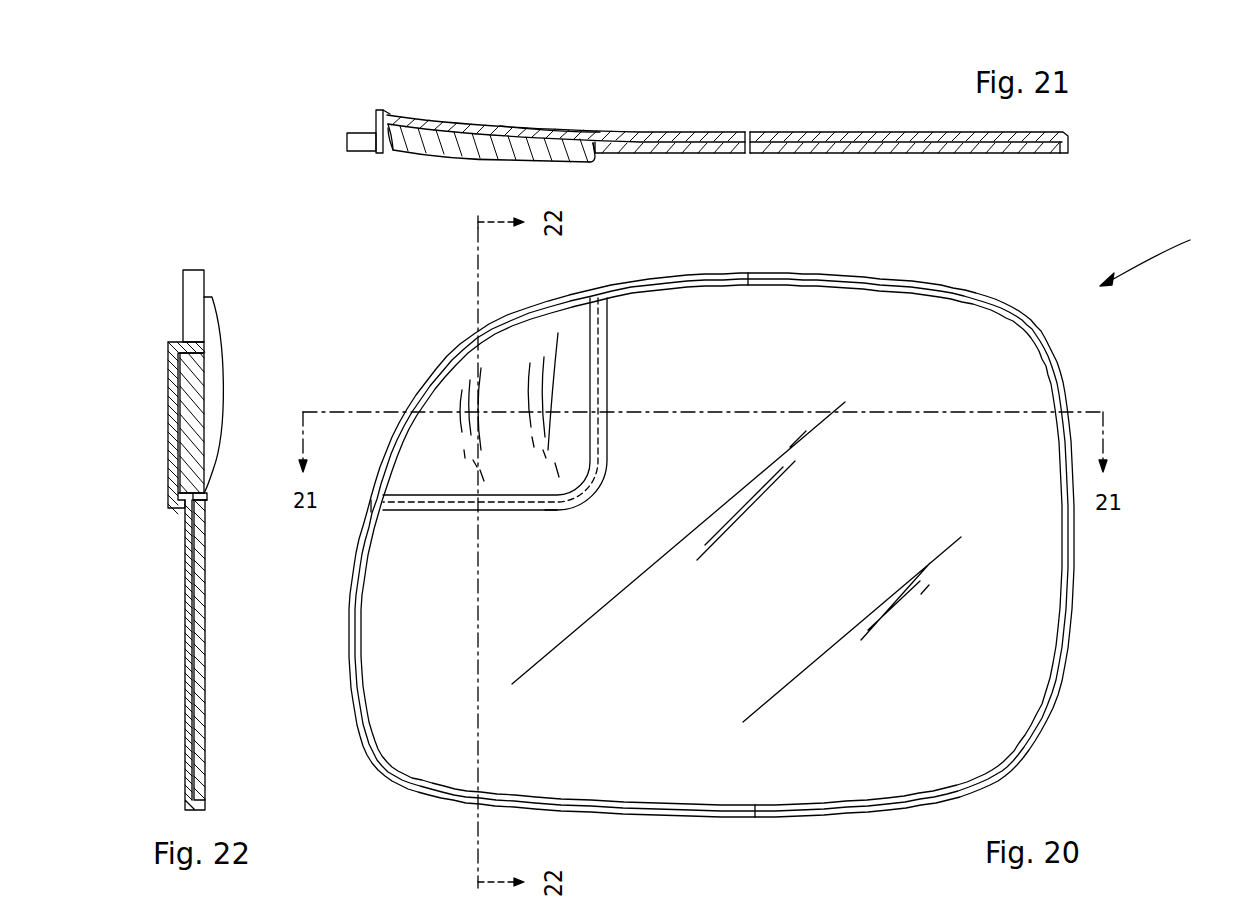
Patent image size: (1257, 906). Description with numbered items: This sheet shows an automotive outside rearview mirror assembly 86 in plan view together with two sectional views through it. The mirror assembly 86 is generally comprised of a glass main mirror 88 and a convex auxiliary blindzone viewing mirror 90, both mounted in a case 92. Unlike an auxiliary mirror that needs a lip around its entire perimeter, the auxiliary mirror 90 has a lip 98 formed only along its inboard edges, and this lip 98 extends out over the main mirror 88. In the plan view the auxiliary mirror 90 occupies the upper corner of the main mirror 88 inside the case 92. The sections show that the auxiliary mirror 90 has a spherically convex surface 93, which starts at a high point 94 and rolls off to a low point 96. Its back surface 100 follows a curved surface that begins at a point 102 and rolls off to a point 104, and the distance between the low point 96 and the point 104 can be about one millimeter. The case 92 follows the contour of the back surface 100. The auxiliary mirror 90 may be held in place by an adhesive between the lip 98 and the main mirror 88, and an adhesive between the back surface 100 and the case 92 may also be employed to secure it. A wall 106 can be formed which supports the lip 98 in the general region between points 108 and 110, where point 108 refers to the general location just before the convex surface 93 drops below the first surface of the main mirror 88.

In FIG. 20, the automotive outside rearview mirror assembly 86 is at (1171, 256).
In FIG. 21, the glass main mirror 88 is at (807, 153).
In FIG. 20, the glass main mirror 88 is at (830, 768).
In FIG. 22, the glass main mirror 88 is at (205, 610).
In FIG. 21, the convex auxiliary blindzone viewing mirror 90 is at (448, 142).
In FIG. 20, the convex auxiliary blindzone viewing mirror 90 is at (523, 343).
In FIG. 22, the convex auxiliary blindzone viewing mirror 90 is at (190, 403).
In FIG. 21, the case 92 is at (797, 132).
In FIG. 20, the case 92 is at (822, 273).
In FIG. 22, the case 92 is at (205, 807).
In FIG. 21, the spherically convex surface 93 is at (492, 154).
In FIG. 22, the spherically convex surface 93 is at (213, 368).
In FIG. 21, the high point 94 is at (597, 164).
In FIG. 21, the low point 96 is at (390, 153).
In FIG. 21, the lip 98 is at (596, 156).
In FIG. 20, the lip 98 is at (607, 330).
In FIG. 22, the lip 98 is at (207, 496).
In FIG. 21, the back surface 100 is at (530, 128).
In FIG. 21, the point 102 is at (597, 150).
In FIG. 21, the point 104 is at (383, 112).
In FIG. 22, the wall 106 is at (208, 500).
In FIG. 20, the point 108 is at (478, 510).
In FIG. 20, the point 110 is at (370, 512).